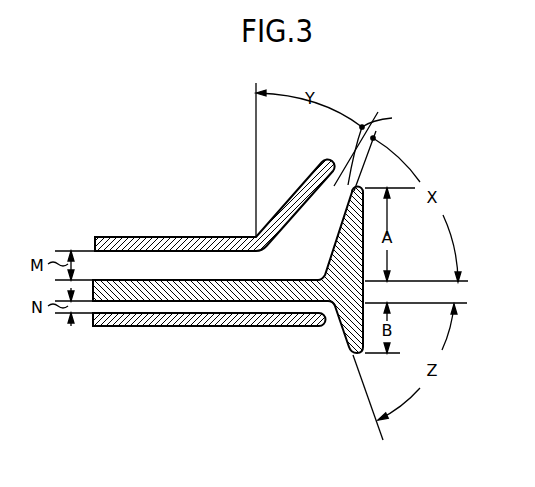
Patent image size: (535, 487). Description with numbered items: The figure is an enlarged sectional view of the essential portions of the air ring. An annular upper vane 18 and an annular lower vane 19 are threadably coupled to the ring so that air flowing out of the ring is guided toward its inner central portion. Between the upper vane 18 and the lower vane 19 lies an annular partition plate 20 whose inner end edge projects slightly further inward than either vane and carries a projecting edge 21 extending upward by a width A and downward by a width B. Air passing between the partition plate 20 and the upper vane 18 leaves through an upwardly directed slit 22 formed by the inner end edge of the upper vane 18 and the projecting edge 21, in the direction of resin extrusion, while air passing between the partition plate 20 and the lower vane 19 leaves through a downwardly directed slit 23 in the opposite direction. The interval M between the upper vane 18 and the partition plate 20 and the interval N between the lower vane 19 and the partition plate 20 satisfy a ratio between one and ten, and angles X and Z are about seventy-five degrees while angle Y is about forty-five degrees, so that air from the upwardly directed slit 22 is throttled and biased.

The upper vane 18 is at (143, 237).
The lower vane 19 is at (160, 326).
The partition plate 20 is at (195, 280).
The projecting edge 21 is at (350, 330).
The upwardly directed slit 22 is at (392, 118).
The downwardly directed slit 23 is at (330, 313).